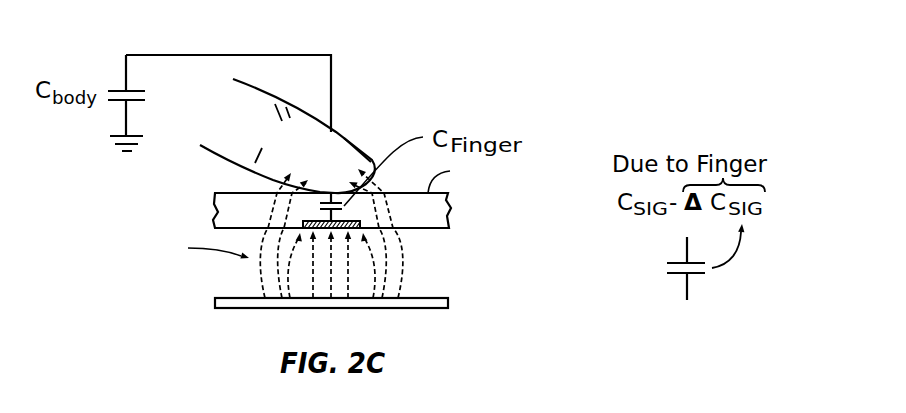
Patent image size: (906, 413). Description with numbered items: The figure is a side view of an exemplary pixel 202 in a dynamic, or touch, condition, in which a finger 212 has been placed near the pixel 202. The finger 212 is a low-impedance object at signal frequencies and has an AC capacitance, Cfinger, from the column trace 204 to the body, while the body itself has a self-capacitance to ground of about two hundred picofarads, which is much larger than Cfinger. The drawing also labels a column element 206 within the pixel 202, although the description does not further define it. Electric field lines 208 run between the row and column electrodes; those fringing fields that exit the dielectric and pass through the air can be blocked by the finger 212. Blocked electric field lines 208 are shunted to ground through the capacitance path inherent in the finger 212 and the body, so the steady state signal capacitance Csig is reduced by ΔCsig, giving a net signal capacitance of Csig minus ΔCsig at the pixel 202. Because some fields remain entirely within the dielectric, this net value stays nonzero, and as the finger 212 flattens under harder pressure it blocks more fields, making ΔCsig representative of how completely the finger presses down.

The pixel 202 is at (348, 264).
The column trace 204 is at (435, 348).
The column electrode 206 is at (302, 223).
The electric field lines 208 is at (407, 262).
The finger 212 is at (318, 118).